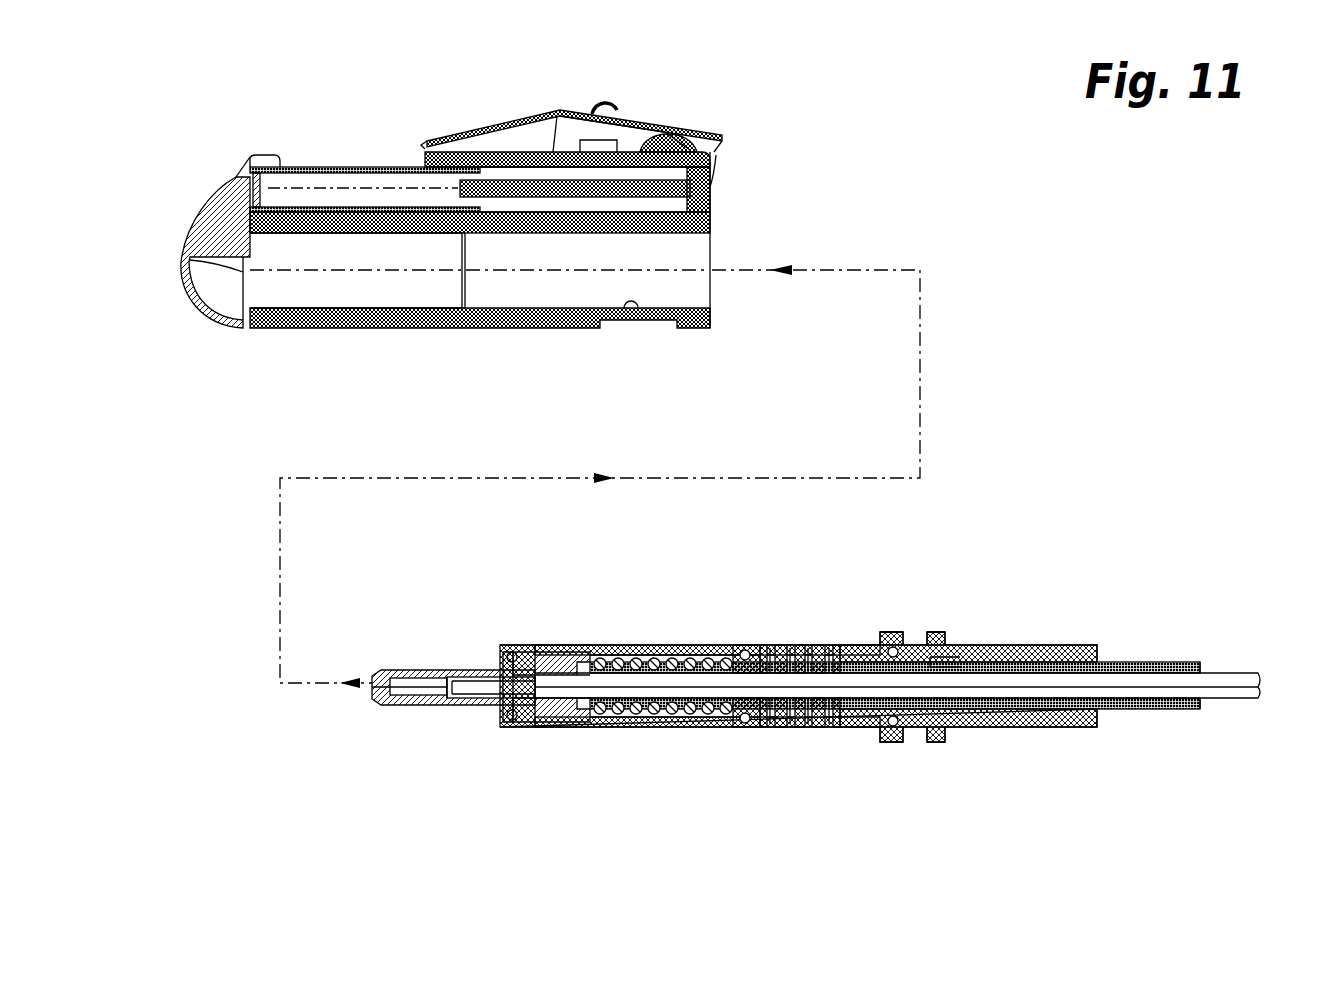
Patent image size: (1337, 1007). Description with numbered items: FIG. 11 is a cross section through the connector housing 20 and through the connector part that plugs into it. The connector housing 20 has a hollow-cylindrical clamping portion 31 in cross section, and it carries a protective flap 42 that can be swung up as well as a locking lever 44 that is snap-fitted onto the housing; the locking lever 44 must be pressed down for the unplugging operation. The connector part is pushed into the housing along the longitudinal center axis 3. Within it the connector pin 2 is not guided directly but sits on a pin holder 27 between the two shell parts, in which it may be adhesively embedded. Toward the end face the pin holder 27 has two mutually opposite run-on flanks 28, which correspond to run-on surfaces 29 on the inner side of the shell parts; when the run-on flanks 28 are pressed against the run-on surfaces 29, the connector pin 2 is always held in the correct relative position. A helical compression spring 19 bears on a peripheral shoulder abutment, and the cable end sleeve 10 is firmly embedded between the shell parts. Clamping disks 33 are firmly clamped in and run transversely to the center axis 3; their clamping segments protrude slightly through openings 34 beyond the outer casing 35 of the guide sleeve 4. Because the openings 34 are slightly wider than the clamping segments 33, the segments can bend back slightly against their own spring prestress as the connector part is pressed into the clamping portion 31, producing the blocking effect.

The connector pin 2 is at (418, 713).
The longitudinal center axis 3 is at (872, 268).
The guide sleeve 4 is at (1005, 732).
The cable end sleeve 10 is at (1163, 712).
The helical compression spring 19 is at (690, 730).
The connector housing 20 is at (348, 330).
The pin holder 27 is at (548, 645).
The run-on flanks 28 is at (547, 727).
The run-on surfaces 29 is at (525, 728).
The clamping portion 31 is at (640, 328).
The clamping disks 33 is at (767, 732).
The openings 34 is at (769, 733).
The outer casing 35 is at (855, 632).
The protective flap 42 is at (209, 335).
The locking lever 44 is at (655, 135).